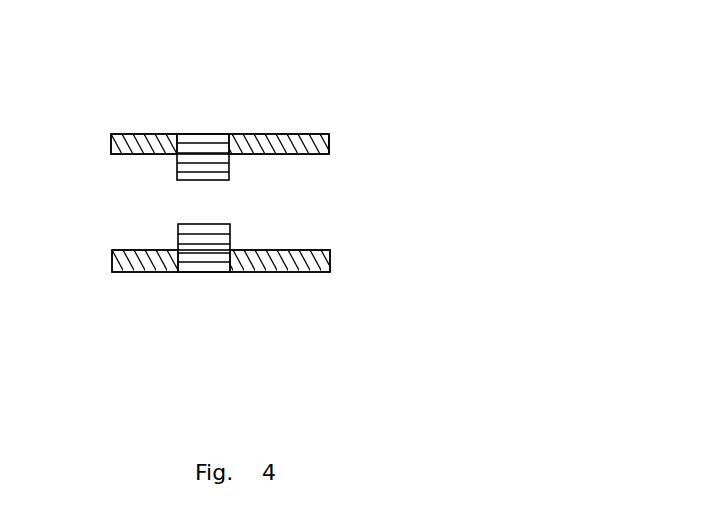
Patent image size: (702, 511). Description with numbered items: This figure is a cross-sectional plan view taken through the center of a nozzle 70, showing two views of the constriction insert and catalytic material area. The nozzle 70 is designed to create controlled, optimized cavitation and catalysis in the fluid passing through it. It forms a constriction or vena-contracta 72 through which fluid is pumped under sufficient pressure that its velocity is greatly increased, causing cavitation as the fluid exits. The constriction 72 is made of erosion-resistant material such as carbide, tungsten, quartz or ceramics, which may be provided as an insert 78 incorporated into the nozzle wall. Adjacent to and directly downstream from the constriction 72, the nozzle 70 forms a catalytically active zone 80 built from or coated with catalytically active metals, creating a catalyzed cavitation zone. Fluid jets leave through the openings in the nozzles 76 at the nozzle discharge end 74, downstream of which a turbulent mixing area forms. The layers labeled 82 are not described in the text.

The nozzle 70 is at (400, 100).
The constriction 72 is at (217, 222).
The nozzle discharge end 74 is at (110, 153).
The openings in the nozzles 76 is at (329, 154).
The insert 78 is at (195, 142).
The catalytically active zone 80 is at (128, 258).
The bonding layer 82 is at (138, 140).